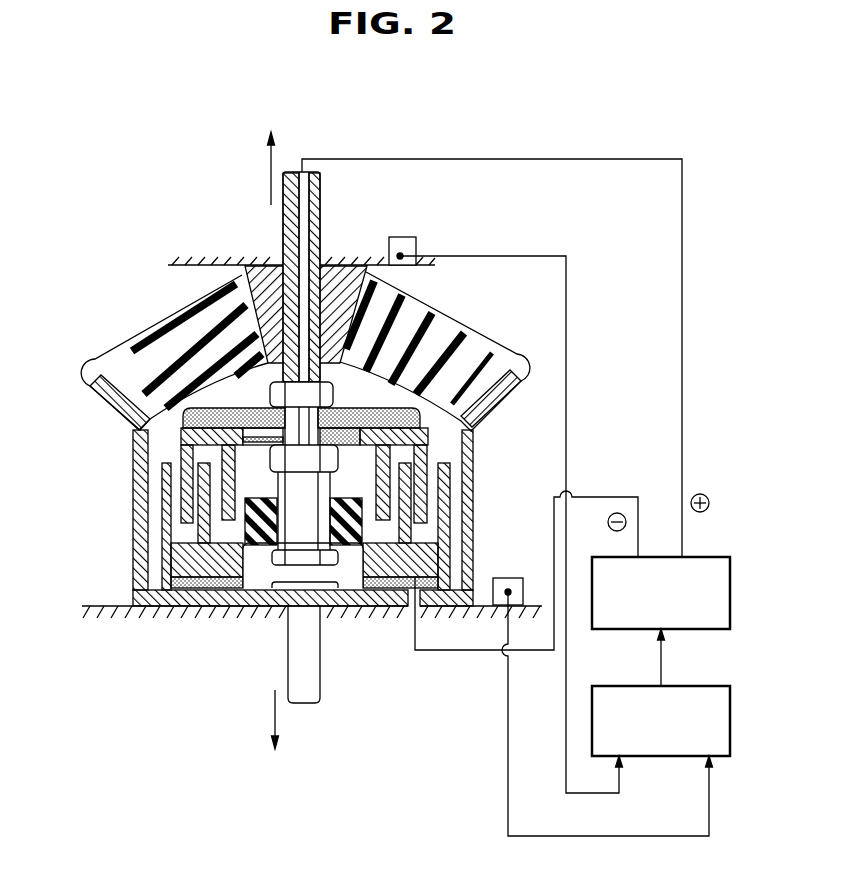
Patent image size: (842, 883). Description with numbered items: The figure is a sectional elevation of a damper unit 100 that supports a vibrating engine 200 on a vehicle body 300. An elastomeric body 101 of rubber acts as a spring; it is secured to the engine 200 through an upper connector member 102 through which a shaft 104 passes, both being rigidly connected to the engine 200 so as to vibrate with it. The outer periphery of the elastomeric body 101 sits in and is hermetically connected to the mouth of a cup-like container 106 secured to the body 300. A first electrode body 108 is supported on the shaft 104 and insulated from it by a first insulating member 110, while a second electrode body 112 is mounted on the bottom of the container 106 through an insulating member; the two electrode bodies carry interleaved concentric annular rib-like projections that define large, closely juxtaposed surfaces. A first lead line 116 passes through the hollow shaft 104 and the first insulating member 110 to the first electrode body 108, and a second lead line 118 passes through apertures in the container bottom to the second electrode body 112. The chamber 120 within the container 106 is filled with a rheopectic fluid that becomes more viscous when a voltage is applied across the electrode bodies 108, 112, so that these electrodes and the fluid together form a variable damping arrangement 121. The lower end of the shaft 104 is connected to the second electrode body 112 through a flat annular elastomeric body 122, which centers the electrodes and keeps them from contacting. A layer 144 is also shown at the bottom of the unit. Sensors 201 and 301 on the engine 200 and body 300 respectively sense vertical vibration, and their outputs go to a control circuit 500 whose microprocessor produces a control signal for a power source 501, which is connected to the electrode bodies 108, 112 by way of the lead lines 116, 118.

The damper unit 100 is at (115, 295).
The elastomeric body 101 is at (440, 312).
The upper connector member 102 is at (253, 278).
The shaft 104 is at (328, 215).
The cup-like container 106 is at (474, 477).
The first electrode body 108 is at (182, 441).
The first insulating member 110 is at (362, 409).
The second electrode body 112 is at (180, 567).
The first lead line 116 is at (512, 158).
The second lead line 118 is at (436, 652).
The chamber 120 is at (443, 444).
The variable damping arrangement 121 is at (152, 484).
The flat annular elastomeric body 122 is at (246, 524).
The seal layer 144 is at (198, 592).
The engine 200 is at (314, 162).
The sensor 201 is at (417, 240).
The body 300 is at (334, 730).
The sensor 301 is at (510, 577).
The control circuit 500 is at (718, 686).
The power source 501 is at (722, 557).